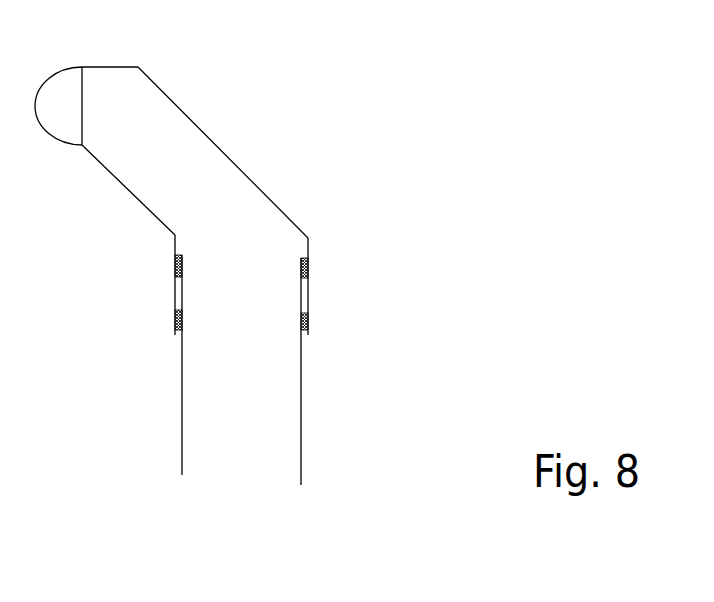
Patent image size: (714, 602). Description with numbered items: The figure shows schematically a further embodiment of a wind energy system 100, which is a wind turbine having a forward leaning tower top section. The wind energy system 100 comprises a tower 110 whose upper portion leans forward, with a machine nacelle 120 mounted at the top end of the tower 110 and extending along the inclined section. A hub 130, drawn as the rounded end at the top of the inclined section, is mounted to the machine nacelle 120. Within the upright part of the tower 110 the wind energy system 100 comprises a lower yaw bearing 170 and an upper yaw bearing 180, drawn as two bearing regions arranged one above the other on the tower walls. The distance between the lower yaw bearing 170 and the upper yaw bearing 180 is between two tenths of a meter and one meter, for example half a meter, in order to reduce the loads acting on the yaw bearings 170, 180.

The wind energy system 100 is at (92, 283).
The tower 110 is at (300, 450).
The machine nacelle 120 is at (223, 153).
The hub 130 is at (70, 67).
The lower yaw bearing 170 is at (308, 320).
The upper yaw bearing 180 is at (308, 265).